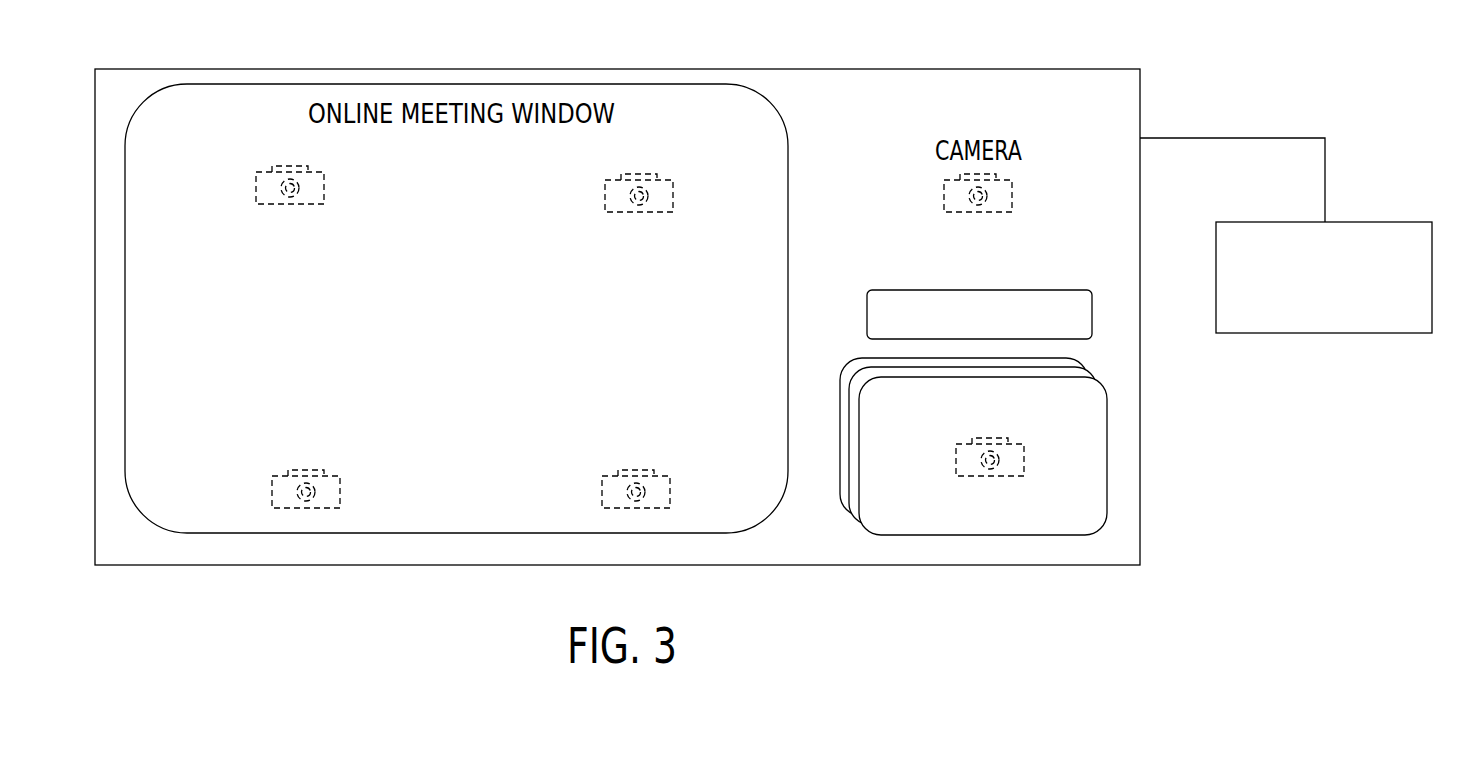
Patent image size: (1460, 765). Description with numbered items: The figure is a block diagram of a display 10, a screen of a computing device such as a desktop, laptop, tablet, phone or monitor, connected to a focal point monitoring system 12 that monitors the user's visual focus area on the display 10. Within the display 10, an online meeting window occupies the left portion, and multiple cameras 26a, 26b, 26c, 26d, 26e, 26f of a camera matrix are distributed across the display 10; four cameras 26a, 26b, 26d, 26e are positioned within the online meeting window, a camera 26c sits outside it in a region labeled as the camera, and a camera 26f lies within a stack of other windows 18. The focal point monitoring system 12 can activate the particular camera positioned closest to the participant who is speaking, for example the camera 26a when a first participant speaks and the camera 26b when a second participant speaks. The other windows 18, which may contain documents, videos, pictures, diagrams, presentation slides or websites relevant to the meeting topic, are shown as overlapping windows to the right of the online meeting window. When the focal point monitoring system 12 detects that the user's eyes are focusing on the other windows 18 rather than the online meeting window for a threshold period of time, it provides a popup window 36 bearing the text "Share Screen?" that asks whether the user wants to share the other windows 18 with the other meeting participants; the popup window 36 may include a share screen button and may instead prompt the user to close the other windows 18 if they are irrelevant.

The display 10 is at (807, 69).
The focal point monitoring system 12 is at (1382, 222).
The other windows 18 is at (1026, 446).
The camera 26a is at (290, 205).
The camera 26b is at (640, 213).
The camera 26c is at (978, 214).
The camera 26d is at (306, 470).
The camera 26e is at (636, 470).
The camera 26f is at (990, 478).
The popup window 36 is at (967, 290).